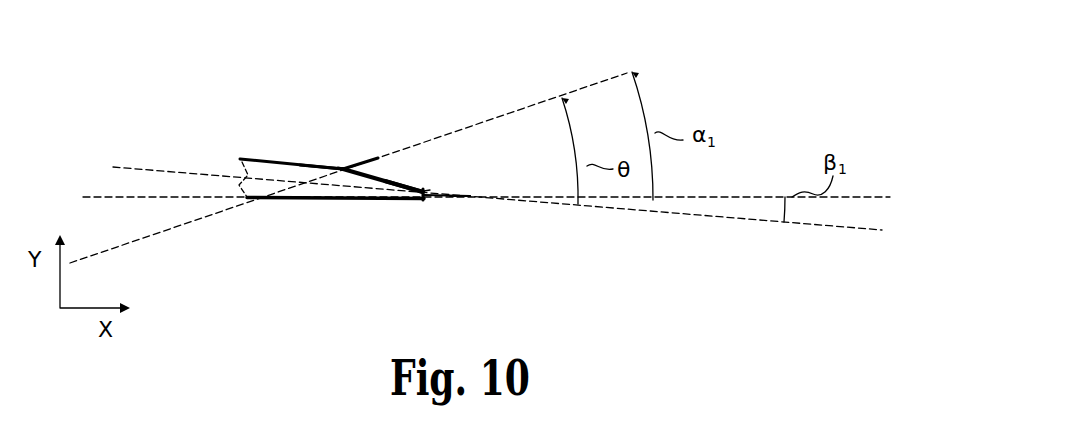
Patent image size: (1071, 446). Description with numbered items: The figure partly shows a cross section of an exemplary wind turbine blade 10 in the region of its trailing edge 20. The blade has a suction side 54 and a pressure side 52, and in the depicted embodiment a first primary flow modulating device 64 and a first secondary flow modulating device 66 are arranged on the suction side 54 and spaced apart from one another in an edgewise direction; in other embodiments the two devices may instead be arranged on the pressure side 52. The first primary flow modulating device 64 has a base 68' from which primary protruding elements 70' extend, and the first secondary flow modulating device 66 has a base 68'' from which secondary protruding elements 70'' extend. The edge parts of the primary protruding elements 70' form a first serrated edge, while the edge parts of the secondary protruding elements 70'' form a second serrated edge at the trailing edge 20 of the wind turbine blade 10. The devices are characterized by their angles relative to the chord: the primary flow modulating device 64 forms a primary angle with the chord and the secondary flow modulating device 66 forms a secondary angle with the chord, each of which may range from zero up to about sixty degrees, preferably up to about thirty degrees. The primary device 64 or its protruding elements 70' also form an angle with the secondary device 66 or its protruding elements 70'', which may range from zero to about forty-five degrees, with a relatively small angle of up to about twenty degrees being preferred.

The wind turbine blade 10 is at (133, 131).
The suction side 54 is at (267, 157).
The pressure side 52 is at (330, 200).
The first primary flow modulating device 64 is at (347, 167).
The base 68' is at (304, 118).
The base 68'' is at (415, 146).
The primary protruding element 70' is at (385, 109).
The secondary protruding element 70'' is at (485, 163).
The first secondary flow modulating device 66 is at (424, 191).
The trailing edge 20 is at (462, 200).